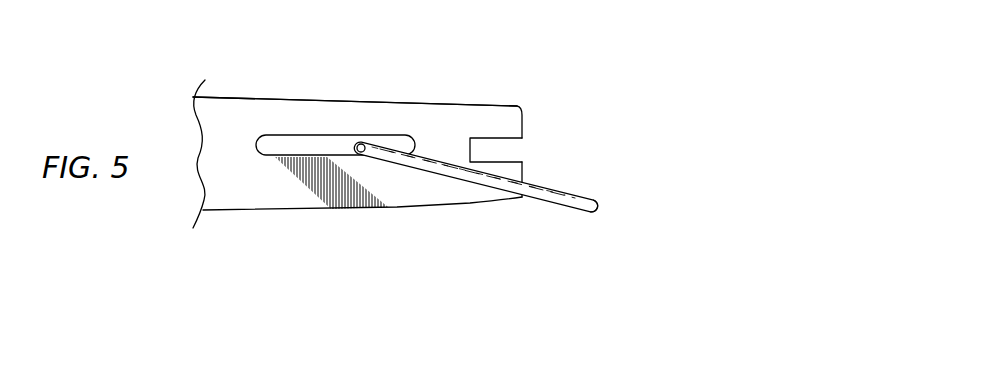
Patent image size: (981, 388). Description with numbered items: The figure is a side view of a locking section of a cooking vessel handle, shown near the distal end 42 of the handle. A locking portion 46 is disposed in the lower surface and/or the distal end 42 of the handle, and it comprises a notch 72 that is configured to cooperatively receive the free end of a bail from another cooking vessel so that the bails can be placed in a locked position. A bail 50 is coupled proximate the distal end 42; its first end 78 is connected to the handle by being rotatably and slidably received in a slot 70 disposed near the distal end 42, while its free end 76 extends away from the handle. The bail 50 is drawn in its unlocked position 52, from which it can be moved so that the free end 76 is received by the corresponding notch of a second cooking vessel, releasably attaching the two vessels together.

The distal end 42 is at (398, 106).
The locking portion 46 is at (532, 80).
The bail 50 is at (495, 160).
The unlocked position 52 is at (457, 211).
The slot 70 is at (277, 146).
The notch 72 is at (505, 140).
The free end 76 is at (597, 208).
The first end 78 is at (360, 146).